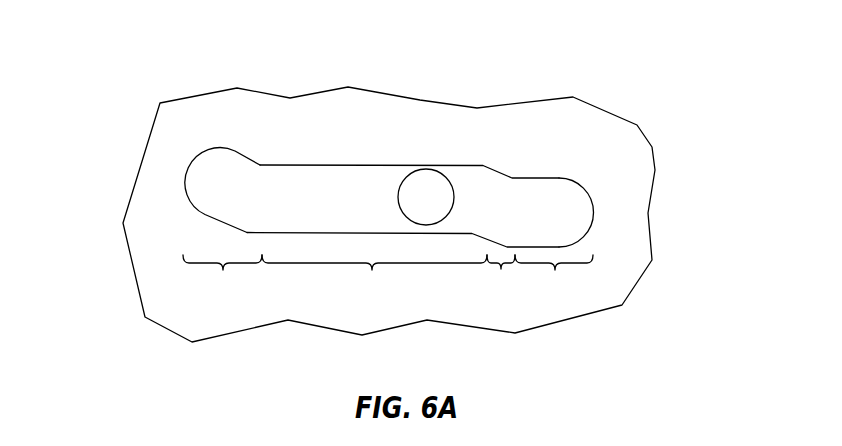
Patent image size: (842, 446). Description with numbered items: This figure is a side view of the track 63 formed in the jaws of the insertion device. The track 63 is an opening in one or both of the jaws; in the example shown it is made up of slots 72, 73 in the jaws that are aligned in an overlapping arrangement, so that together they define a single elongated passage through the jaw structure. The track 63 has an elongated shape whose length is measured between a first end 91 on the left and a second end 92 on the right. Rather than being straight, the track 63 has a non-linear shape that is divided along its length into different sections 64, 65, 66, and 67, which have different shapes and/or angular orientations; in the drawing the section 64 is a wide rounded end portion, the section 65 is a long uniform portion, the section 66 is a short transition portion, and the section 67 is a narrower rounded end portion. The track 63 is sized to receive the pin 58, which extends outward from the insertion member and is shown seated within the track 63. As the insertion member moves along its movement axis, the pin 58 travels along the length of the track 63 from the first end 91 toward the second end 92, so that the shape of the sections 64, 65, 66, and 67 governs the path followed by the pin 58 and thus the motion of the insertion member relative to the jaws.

The pin 58 is at (422, 187).
The track 63 is at (387, 138).
The first section 64 is at (222, 276).
The second section 65 is at (374, 276).
The third section 66 is at (501, 276).
The fourth section 67 is at (554, 276).
The slot 72 is at (409, 114).
The slot 73 is at (363, 163).
The first end 91 is at (187, 168).
The second end 92 is at (595, 205).